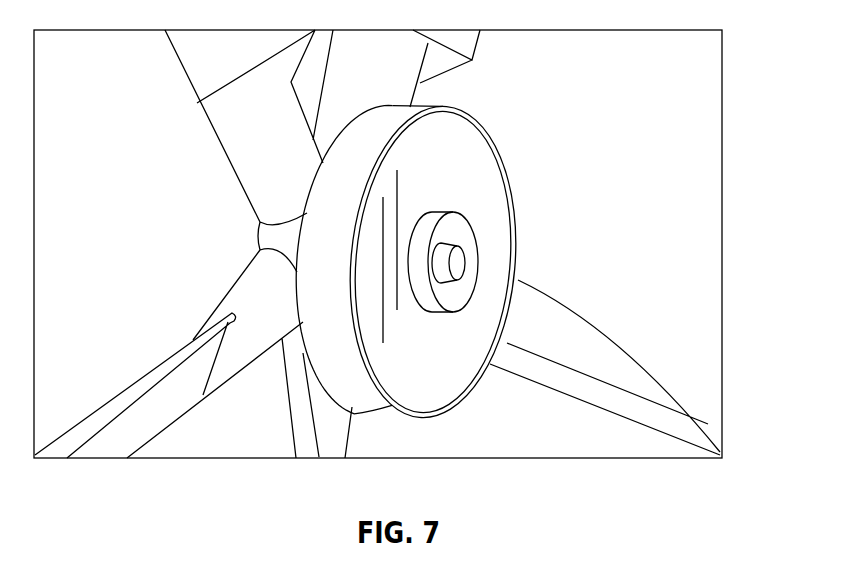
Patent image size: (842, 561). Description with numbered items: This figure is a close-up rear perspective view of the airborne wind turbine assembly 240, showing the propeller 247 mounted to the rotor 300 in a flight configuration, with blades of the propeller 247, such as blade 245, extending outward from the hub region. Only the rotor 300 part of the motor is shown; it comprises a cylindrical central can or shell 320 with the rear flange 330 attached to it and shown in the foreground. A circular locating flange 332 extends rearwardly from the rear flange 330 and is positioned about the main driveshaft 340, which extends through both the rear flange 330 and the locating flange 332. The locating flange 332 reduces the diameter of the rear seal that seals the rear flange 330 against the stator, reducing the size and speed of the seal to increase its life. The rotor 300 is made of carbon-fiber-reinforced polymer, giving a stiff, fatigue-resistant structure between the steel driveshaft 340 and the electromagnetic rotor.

The airborne wind turbine assembly 240 is at (598, 97).
The blade 245 is at (593, 338).
The propeller 247 is at (293, 242).
The rotor 300 is at (257, 433).
The can or shell 320 is at (348, 363).
The rear flange 330 is at (457, 378).
The circular locating flange 332 is at (428, 273).
The main driveshaft 340 is at (463, 263).